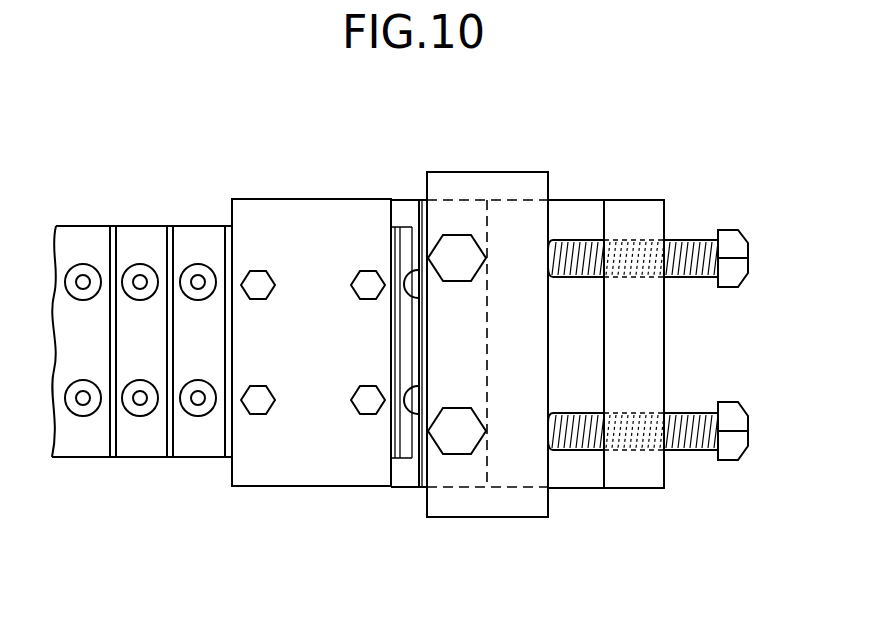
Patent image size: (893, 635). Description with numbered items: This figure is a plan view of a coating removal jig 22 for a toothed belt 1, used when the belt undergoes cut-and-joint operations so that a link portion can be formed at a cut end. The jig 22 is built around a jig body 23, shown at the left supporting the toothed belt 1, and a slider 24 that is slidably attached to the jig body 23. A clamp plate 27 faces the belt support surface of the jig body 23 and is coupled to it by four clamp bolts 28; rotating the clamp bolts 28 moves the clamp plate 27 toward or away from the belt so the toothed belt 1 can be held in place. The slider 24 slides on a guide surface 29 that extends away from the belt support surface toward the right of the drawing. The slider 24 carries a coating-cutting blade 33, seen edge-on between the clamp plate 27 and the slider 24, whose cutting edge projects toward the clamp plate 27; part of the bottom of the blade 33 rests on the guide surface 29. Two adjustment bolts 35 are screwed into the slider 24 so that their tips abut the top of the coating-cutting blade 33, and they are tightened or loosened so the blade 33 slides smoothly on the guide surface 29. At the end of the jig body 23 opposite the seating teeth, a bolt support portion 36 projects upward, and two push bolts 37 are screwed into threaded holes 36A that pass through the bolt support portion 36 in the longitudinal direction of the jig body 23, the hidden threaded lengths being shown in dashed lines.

The toothed belt 1 is at (130, 212).
The coating removal jig 22 is at (612, 505).
The jig body 23 is at (569, 200).
The slider 24 is at (518, 180).
The clamp plate 27 is at (316, 222).
The clamp bolts 28 is at (258, 270).
The guide surface 29 is at (583, 225).
The coating-cutting blade 33 is at (419, 480).
The adjustment bolts 35 is at (459, 234).
The bolt support portion 36 is at (652, 210).
The threaded holes 36A is at (630, 275).
The push bolts 37 is at (742, 236).